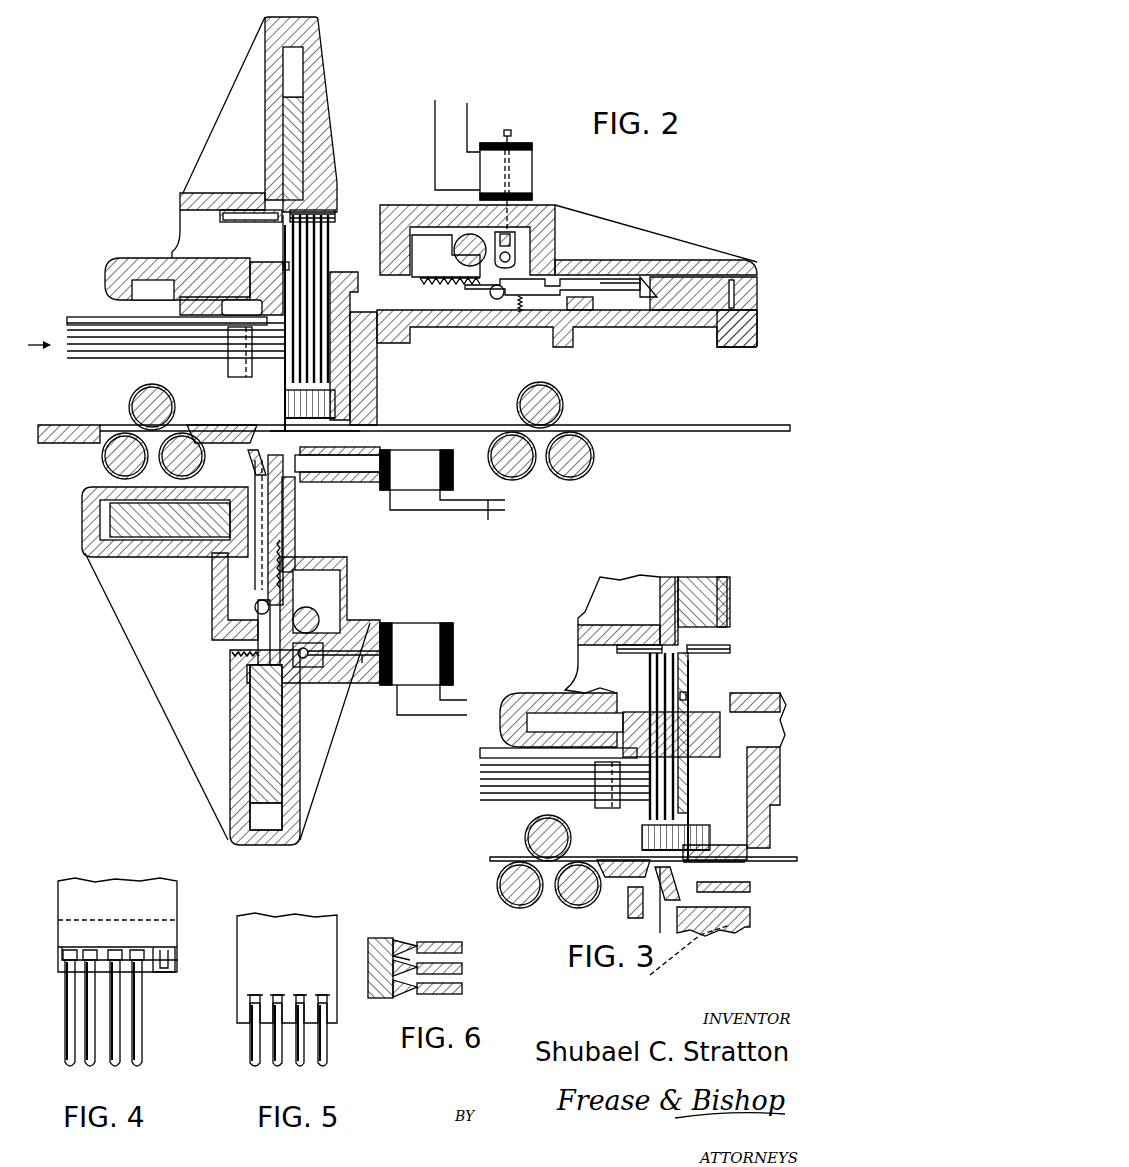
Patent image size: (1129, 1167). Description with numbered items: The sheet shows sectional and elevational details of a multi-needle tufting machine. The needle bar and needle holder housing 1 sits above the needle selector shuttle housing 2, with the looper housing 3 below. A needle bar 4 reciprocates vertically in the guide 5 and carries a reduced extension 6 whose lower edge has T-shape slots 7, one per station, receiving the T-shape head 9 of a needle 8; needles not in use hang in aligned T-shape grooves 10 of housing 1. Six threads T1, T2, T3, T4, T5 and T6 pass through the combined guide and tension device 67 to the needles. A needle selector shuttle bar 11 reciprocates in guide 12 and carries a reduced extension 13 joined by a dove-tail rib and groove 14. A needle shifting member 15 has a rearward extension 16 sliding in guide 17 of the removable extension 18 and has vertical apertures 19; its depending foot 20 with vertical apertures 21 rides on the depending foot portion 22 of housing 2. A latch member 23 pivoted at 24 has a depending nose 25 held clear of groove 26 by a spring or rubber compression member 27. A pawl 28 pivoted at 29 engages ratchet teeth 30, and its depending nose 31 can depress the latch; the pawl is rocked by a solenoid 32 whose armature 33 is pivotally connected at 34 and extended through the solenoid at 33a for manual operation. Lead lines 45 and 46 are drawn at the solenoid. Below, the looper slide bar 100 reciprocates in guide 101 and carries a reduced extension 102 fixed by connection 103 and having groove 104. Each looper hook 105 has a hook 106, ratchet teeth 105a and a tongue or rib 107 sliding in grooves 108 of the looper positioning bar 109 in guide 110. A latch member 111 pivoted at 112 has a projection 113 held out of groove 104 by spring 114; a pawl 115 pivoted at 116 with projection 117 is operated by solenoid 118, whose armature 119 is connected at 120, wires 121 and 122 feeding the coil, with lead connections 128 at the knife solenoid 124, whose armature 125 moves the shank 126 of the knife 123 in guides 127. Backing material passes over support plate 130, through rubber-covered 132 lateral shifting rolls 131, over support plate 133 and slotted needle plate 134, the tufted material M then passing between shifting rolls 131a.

In FIG. 2, the needle bar and needle holder housing 1 is at (176, 200).
In FIG. 3, the needle bar and needle holder housing 1 is at (560, 688).
In FIG. 4, the needle bar and needle holder housing 1 is at (180, 905).
In FIG. 2, the needle selector shuttle housing 2 is at (670, 258).
In FIG. 2, the looper housing 3 is at (205, 628).
In FIG. 2, the needle bar 4 is at (295, 147).
In FIG. 3, the needle bar 4 is at (705, 600).
In FIG. 2, the guide 5 is at (300, 70).
In FIG. 3, the guide 5 is at (676, 590).
In FIG. 2, the reduced extension 6 is at (282, 213).
In FIG. 3, the reduced extension 6 is at (690, 669).
In FIG. 5, the reduced extension 6 is at (305, 920).
In FIG. 2, the T-shape slots 7 is at (283, 264).
In FIG. 3, the T-shape slots 7 is at (687, 696).
In FIG. 5, the T-shape slots 7 is at (318, 996).
In FIG. 2, the needle 8 is at (283, 373).
In FIG. 3, the needle 8 is at (646, 680).
In FIG. 4, the needle 8 is at (70, 1030).
In FIG. 5, the needle 8 is at (248, 1047).
In FIG. 4, the T-shape head 9 is at (135, 950).
In FIG. 5, the T-shape head 9 is at (250, 1012).
In FIG. 2, the T-shape grooves 10 is at (335, 214).
In FIG. 3, the T-shape grooves 10 is at (630, 650).
In FIG. 4, the T-shape grooves 10 is at (100, 948).
In FIG. 2, the needle selector shuttle bar 11 is at (735, 300).
In FIG. 2, the guide 12 is at (700, 284).
In FIG. 2, the reduced extension 13 is at (620, 304).
In FIG. 2, the dove-tail rib and groove 14 is at (660, 304).
In FIG. 2, the needle shifting member 15 is at (443, 327).
In FIG. 3, the needle shifting member 15 is at (767, 727).
In FIG. 2, the rearward extension 16 is at (180, 265).
In FIG. 3, the rearward extension 16 is at (545, 720).
In FIG. 2, the guide 17 is at (138, 262).
In FIG. 2, the removable extension 18 is at (105, 302).
In FIG. 3, the removable extension 18 is at (558, 753).
In FIG. 2, the vertical apertures 19 is at (258, 293).
In FIG. 3, the vertical apertures 19 is at (622, 723).
In FIG. 2, the depending foot 20 is at (283, 408).
In FIG. 3, the depending foot 20 is at (642, 835).
In FIG. 2, the vertical apertures 21 is at (322, 417).
In FIG. 3, the vertical apertures 21 is at (706, 836).
In FIG. 2, the depending foot portion 22 is at (377, 416).
In FIG. 3, the depending foot portion 22 is at (771, 832).
In FIG. 2, the latch member 23 is at (562, 282).
In FIG. 2, the pivot 24 is at (495, 299).
In FIG. 2, the depending nose 25 is at (605, 281).
In FIG. 2, the groove 26 is at (73, 297).
In FIG. 2, the spring or rubber compression member 27 is at (522, 306).
In FIG. 2, the pawl 28 is at (432, 250).
In FIG. 2, the pivot 29 is at (468, 238).
In FIG. 2, the ratchet teeth 30 is at (446, 284).
In FIG. 2, the depending nose 31 is at (516, 258).
In FIG. 2, the solenoid 32 is at (533, 170).
In FIG. 2, the armature 33 is at (505, 215).
In FIG. 2, the armature extension 33a is at (511, 130).
In FIG. 2, the pivotal connection 34 is at (511, 239).
In FIG. 2, the lead wire 45 is at (435, 141).
In FIG. 2, the lead wire 46 is at (470, 108).
In FIG. 2, the combined guide and tension device 67 is at (226, 366).
In FIG. 3, the combined guide and tension device 67 is at (604, 787).
In FIG. 2, the looper slide bar 100 is at (246, 762).
In FIG. 2, the guide 101 is at (250, 821).
In FIG. 2, the reduced extension 102 is at (250, 676).
In FIG. 2, the dove-tail rib and groove connection 103 is at (256, 706).
In FIG. 2, the groove or recess 104 is at (254, 692).
In FIG. 2, the looper hook 105 is at (290, 522).
In FIG. 6, the looper hook 105 is at (463, 989).
In FIG. 2, the ratchet teeth 105a is at (300, 556).
In FIG. 2, the hook 106 is at (290, 430).
In FIG. 3, the hook 106 is at (692, 863).
In FIG. 2, the tongue or rib 107 is at (242, 562).
In FIG. 6, the tongue or rib 107 is at (397, 992).
In FIG. 2, the grooves 108 is at (238, 538).
In FIG. 6, the grooves 108 is at (405, 944).
In FIG. 2, the looper positioning bar 109 is at (146, 557).
In FIG. 3, the looper positioning bar 109 is at (630, 906).
In FIG. 6, the looper positioning bar 109 is at (378, 938).
In FIG. 2, the guide 110 is at (100, 522).
In FIG. 2, the latch member 111 is at (258, 642).
In FIG. 2, the pivot 112 is at (270, 606).
In FIG. 2, the projection or nose 113 is at (272, 684).
In FIG. 2, the spring 114 is at (234, 661).
In FIG. 2, the pawl 115 is at (322, 597).
In FIG. 2, the pivot 116 is at (318, 622).
In FIG. 2, the projection 117 is at (298, 662).
In FIG. 2, the solenoid 118 is at (430, 640).
In FIG. 2, the armature 119 is at (364, 662).
In FIG. 2, the pivotal connection 120 is at (310, 656).
In FIG. 2, the wire 121 is at (458, 700).
In FIG. 2, the wire 122 is at (430, 716).
In FIG. 2, the knife 123 is at (252, 458).
In FIG. 3, the knife 123 is at (665, 886).
In FIG. 2, the solenoid 124 is at (440, 471).
In FIG. 2, the armature 125 is at (392, 494).
In FIG. 2, the shank 126 is at (318, 485).
In FIG. 3, the shank 126 is at (712, 916).
In FIG. 2, the guides 127 is at (350, 485).
In FIG. 2, the lead wires 128 is at (492, 538).
In FIG. 2, the support plate 130 is at (55, 444).
In FIG. 2, the lateral shifting rolls 131 is at (118, 457).
In FIG. 3, the lateral shifting rolls 131 is at (525, 839).
In FIG. 2, the lateral shifting rolls 131a is at (565, 403).
In FIG. 2, the friction covering 132 is at (128, 410).
In FIG. 2, the support plate 133 is at (224, 435).
In FIG. 3, the support plate 133 is at (626, 862).
In FIG. 2, the slotted needle plate 134 is at (375, 429).
In FIG. 3, the slotted needle plate 134 is at (745, 863).
In FIG. 2, the thread T1 is at (150, 359).
In FIG. 3, the thread T1 is at (550, 801).
In FIG. 2, the thread T2 is at (127, 352).
In FIG. 3, the thread T2 is at (535, 794).
In FIG. 2, the thread T3 is at (112, 345).
In FIG. 3, the thread T3 is at (520, 787).
In FIG. 2, the thread T4 is at (102, 338).
In FIG. 3, the thread T4 is at (495, 766).
In FIG. 2, the thread T5 is at (92, 324).
In FIG. 3, the thread T5 is at (495, 773).
In FIG. 2, the thread T6 is at (97, 331).
In FIG. 3, the thread T6 is at (500, 780).
In FIG. 2, the tufted material M is at (480, 425).
In FIG. 3, the tufted material M is at (790, 857).